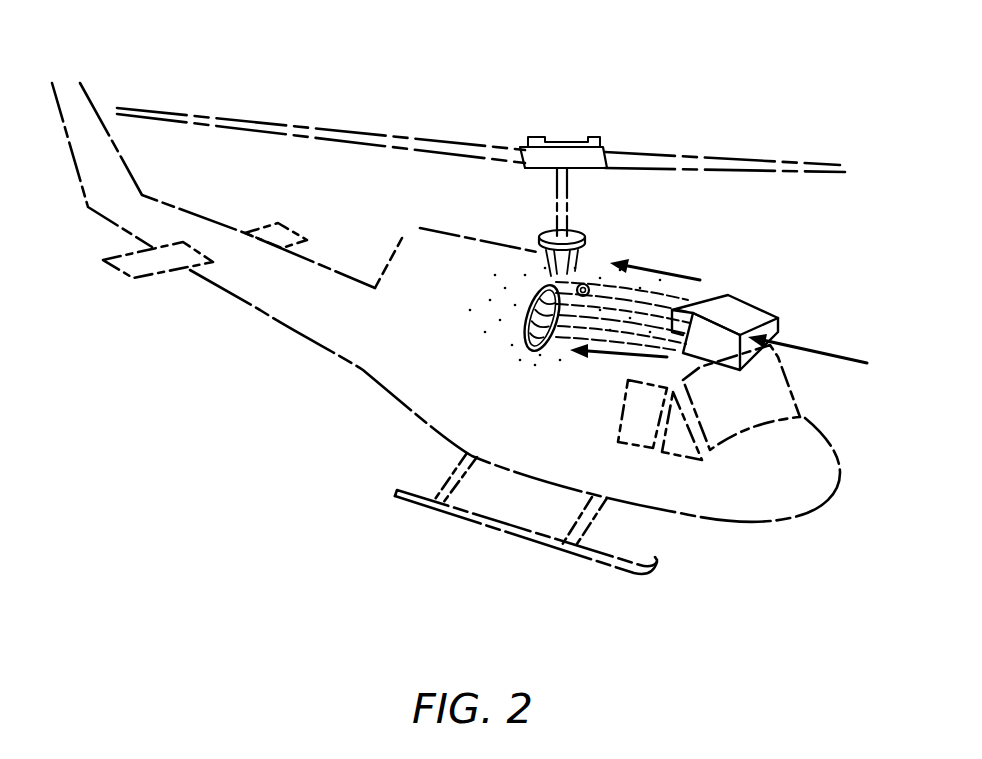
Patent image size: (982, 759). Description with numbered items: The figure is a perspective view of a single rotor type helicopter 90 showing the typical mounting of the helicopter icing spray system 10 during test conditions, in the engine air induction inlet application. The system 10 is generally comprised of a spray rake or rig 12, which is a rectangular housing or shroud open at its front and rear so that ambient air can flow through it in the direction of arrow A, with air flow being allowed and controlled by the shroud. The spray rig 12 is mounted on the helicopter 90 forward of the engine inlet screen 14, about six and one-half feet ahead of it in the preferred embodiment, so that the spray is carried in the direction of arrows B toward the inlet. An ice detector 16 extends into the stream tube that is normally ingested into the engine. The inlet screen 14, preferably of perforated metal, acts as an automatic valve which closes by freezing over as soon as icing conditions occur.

The helicopter icing spray system 10 is at (747, 292).
The spray rake 12 is at (753, 320).
The engine inlet screen 14 is at (513, 325).
The ice detector 16 is at (588, 284).
The helicopter 90 is at (324, 322).
The ambient air flow arrow A is at (818, 355).
The spray stream arrow B is at (635, 314).